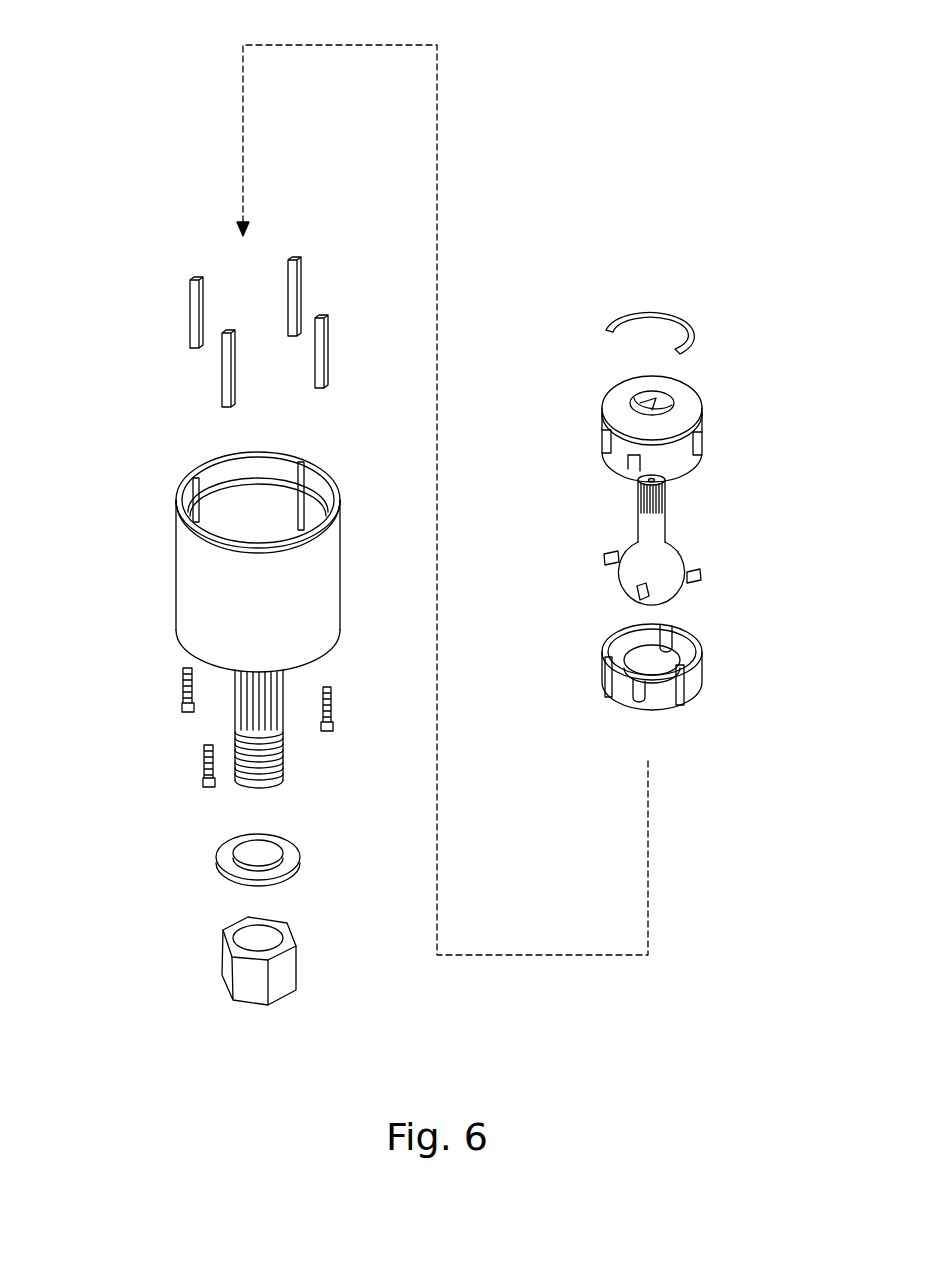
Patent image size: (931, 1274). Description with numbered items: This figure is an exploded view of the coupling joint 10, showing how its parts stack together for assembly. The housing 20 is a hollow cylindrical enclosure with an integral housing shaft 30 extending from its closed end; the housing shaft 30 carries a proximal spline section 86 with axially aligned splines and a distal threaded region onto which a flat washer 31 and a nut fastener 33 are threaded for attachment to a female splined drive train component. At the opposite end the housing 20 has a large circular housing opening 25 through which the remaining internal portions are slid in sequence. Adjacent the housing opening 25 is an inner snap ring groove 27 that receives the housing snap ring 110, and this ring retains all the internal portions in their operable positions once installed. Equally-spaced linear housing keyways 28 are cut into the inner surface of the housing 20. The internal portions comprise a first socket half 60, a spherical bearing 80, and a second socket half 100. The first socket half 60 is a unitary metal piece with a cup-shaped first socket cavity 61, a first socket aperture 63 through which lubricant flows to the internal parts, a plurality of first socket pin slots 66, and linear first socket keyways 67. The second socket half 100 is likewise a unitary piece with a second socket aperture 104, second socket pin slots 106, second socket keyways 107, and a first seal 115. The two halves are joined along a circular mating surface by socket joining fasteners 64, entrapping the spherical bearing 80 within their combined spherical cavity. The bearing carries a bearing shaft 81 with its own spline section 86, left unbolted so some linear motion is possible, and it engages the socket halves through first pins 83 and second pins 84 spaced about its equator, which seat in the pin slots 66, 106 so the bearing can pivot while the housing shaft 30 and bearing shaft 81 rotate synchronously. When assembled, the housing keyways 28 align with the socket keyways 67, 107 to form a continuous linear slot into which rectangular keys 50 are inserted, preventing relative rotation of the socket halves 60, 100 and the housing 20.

The coupling joint 10 is at (116, 71).
The housing 20 is at (202, 564).
The housing opening 25 is at (327, 472).
The snap ring groove 27 is at (218, 483).
The housing keyway 28 is at (302, 513).
The housing shaft 30 is at (243, 703).
The flat washer 31 is at (214, 857).
The nut fastener 33 is at (222, 933).
The key 50 is at (315, 373).
The first socket half 60 is at (603, 670).
The first socket cavity 61 is at (672, 657).
The first socket aperture 63 is at (608, 636).
The socket joining fastener 64 is at (182, 700).
The first socket pin slot 66 is at (623, 663).
The first socket keyway 67 is at (690, 690).
The spherical bearing 80 is at (663, 562).
The bearing shaft 81 is at (655, 528).
The first pin 83 is at (605, 557).
The second pin 84 is at (632, 597).
The spline section 86 is at (660, 500).
The second socket half 100 is at (602, 425).
The second socket aperture 104 is at (668, 396).
The second socket pin slot 106 is at (700, 447).
The second socket keyway 107 is at (630, 462).
The housing snap ring 110 is at (690, 322).
The first seal 115 is at (627, 432).